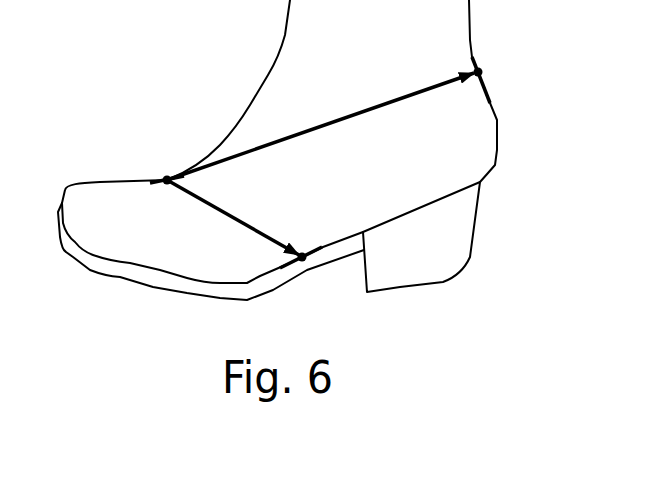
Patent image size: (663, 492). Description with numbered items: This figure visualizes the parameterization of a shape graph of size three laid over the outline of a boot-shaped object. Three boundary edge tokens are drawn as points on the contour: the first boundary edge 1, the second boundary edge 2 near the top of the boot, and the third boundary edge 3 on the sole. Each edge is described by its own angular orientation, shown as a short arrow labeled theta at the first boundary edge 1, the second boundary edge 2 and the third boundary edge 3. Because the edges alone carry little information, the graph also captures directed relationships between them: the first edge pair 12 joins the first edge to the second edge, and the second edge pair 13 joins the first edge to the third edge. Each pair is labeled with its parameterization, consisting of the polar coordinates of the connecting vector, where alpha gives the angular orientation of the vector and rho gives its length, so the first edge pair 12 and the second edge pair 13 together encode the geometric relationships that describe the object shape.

The first boundary edge 1 is at (167, 180).
The second boundary edge 2 is at (478, 72).
The third boundary edge 3 is at (302, 257).
The first edge pair 12 is at (320, 114).
The second edge pair 13 is at (205, 219).